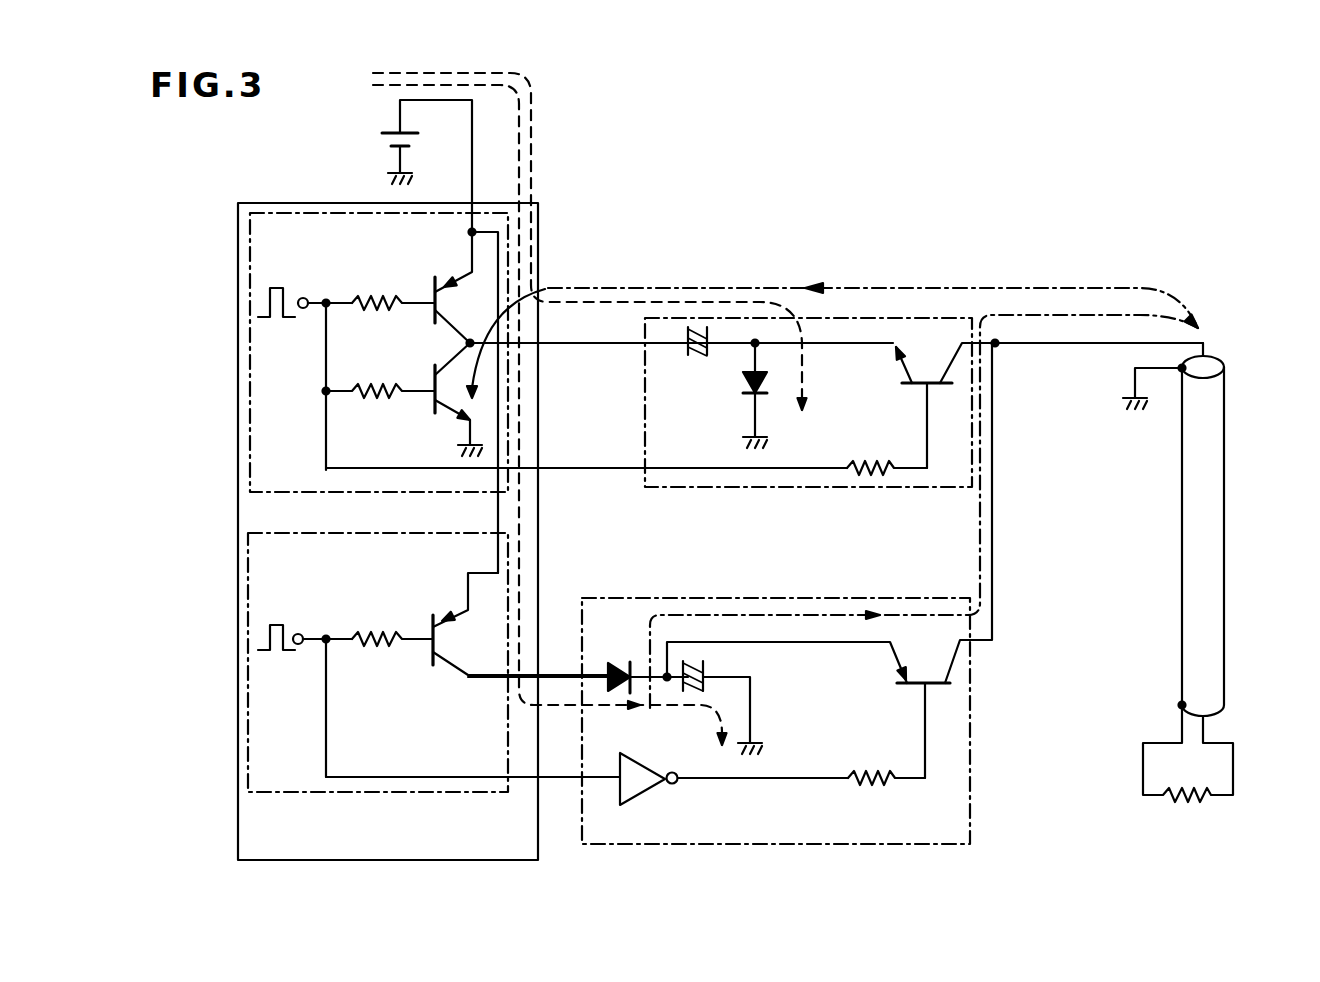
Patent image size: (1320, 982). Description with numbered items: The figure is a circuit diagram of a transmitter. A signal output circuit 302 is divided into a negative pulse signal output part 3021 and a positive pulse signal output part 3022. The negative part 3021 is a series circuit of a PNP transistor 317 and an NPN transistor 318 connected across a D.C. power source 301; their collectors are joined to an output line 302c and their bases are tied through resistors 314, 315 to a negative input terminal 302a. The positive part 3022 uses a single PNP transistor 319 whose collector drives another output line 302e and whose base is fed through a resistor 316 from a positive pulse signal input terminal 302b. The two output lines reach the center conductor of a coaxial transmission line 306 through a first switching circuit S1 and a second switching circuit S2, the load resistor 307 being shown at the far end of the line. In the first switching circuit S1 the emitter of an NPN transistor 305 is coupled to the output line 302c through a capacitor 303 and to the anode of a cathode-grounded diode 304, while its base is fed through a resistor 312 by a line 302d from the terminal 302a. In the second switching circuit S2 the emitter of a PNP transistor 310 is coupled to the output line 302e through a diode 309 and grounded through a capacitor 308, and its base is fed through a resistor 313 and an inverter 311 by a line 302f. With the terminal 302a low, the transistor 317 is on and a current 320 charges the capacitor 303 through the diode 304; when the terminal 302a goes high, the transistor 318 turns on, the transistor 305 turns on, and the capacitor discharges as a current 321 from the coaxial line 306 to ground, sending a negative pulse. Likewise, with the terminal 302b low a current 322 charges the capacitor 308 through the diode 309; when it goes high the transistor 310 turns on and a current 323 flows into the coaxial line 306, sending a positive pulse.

The D.C. power source 301 is at (372, 138).
The signal output circuit 302 is at (238, 818).
The negative pulse signal output part 3021 is at (252, 436).
The positive pulse signal output part 3022 is at (250, 602).
The negative input terminal 302a is at (304, 298).
The positive pulse signal input terminal 302b is at (295, 630).
The output line 302c is at (580, 347).
The line 302d is at (593, 472).
The output line 302e is at (565, 675).
The line 302f is at (563, 782).
The capacitor 303 is at (692, 358).
The cathode-grounded diode 304 is at (742, 380).
The NPN transistor 305 is at (905, 365).
The coaxial transmission line 306 is at (1215, 431).
The resistor 307 is at (1190, 800).
The capacitor 308 is at (703, 668).
The diode 309 is at (620, 663).
The PNP transistor 310 is at (895, 658).
The inverter 311 is at (643, 788).
The resistor 312 is at (870, 475).
The resistor 313 is at (872, 790).
The resistor 314 is at (383, 300).
The resistor 315 is at (382, 398).
The resistor 316 is at (383, 638).
The PNP transistor 317 is at (448, 275).
The NPN transistor 318 is at (457, 372).
The PNP transistor 319 is at (447, 620).
The current 320 is at (803, 362).
The current 321 is at (855, 285).
The current 322 is at (599, 706).
The current 323 is at (840, 613).
The first switching circuit S1 is at (770, 485).
The second switching circuit S2 is at (762, 597).